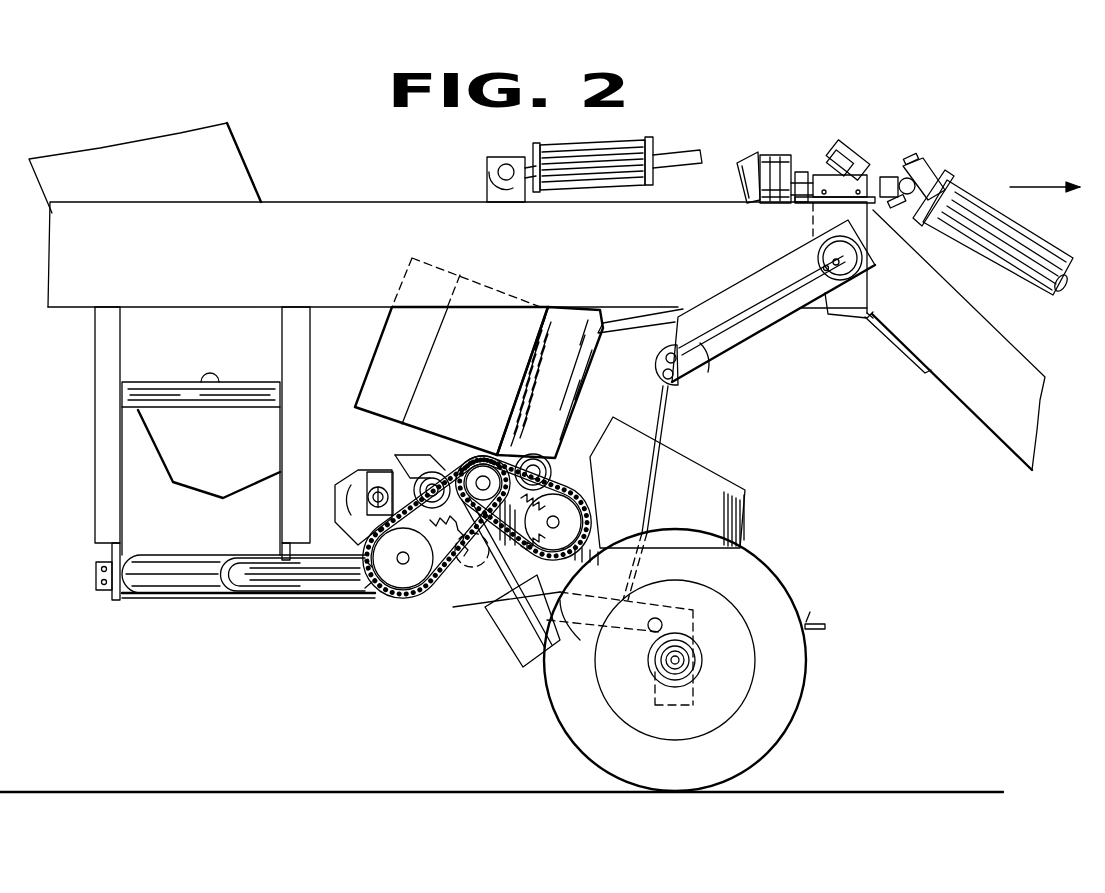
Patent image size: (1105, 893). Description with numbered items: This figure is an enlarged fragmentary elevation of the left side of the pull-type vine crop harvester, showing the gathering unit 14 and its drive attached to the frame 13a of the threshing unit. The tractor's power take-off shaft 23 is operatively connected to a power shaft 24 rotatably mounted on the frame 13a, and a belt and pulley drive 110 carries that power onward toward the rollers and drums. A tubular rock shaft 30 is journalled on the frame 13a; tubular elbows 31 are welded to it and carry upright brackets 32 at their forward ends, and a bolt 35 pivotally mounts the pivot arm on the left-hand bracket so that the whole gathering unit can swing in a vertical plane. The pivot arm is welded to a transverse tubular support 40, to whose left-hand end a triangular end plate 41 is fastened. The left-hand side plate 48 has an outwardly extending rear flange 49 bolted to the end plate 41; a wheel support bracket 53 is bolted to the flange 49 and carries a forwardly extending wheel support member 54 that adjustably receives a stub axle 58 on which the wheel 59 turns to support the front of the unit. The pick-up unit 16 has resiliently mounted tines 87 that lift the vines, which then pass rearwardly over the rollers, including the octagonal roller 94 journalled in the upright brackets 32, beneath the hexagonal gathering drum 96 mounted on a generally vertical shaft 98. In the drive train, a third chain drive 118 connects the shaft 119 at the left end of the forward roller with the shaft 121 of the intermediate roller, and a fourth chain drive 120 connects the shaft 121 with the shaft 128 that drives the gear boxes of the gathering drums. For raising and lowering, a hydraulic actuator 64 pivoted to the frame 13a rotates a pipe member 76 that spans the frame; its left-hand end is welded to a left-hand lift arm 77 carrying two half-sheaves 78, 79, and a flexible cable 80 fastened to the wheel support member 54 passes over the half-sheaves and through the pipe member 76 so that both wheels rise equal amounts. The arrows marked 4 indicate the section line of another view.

The frame 13a is at (334, 198).
The hydraulic actuator 64 is at (620, 146).
The belt and pulley drive 110 is at (781, 155).
The power shaft 24 is at (842, 178).
The power take-off shaft 23 is at (1000, 228).
The half-sheave 79 is at (806, 274).
The pipe member 76 is at (872, 272).
The left-hand lift arm 77 is at (752, 340).
The half-sheave 78 is at (658, 357).
The flexible cable 80 is at (658, 406).
The hexagonal gathering drum 96 is at (498, 364).
The octagonal roller 94 is at (397, 453).
The shaft 98 is at (440, 470).
The shaft 121 is at (522, 463).
The third chain drive 118 is at (517, 485).
The left-hand side plate 48 is at (624, 517).
The section line 4- 4 is at (380, 478).
The upright brackets 32 is at (370, 482).
The bolt 35 is at (373, 498).
The tubular rock shaft 30 is at (157, 572).
The tubular elbows 31 is at (268, 580).
The fourth chain drive 120 is at (360, 568).
The shaft 128 is at (380, 588).
The triangular end plate 41 is at (445, 595).
The transverse tubular support 40 is at (470, 570).
The rear flange 49 is at (503, 581).
The shaft 119 is at (555, 524).
The wheel support member 54 is at (622, 632).
The wheel support bracket 53 is at (530, 658).
The stub axles 58 is at (678, 662).
The pick-up unit 16 is at (818, 622).
The tines 87 is at (825, 626).
The gathering unit 14 is at (828, 660).
The wheel 59 is at (695, 782).